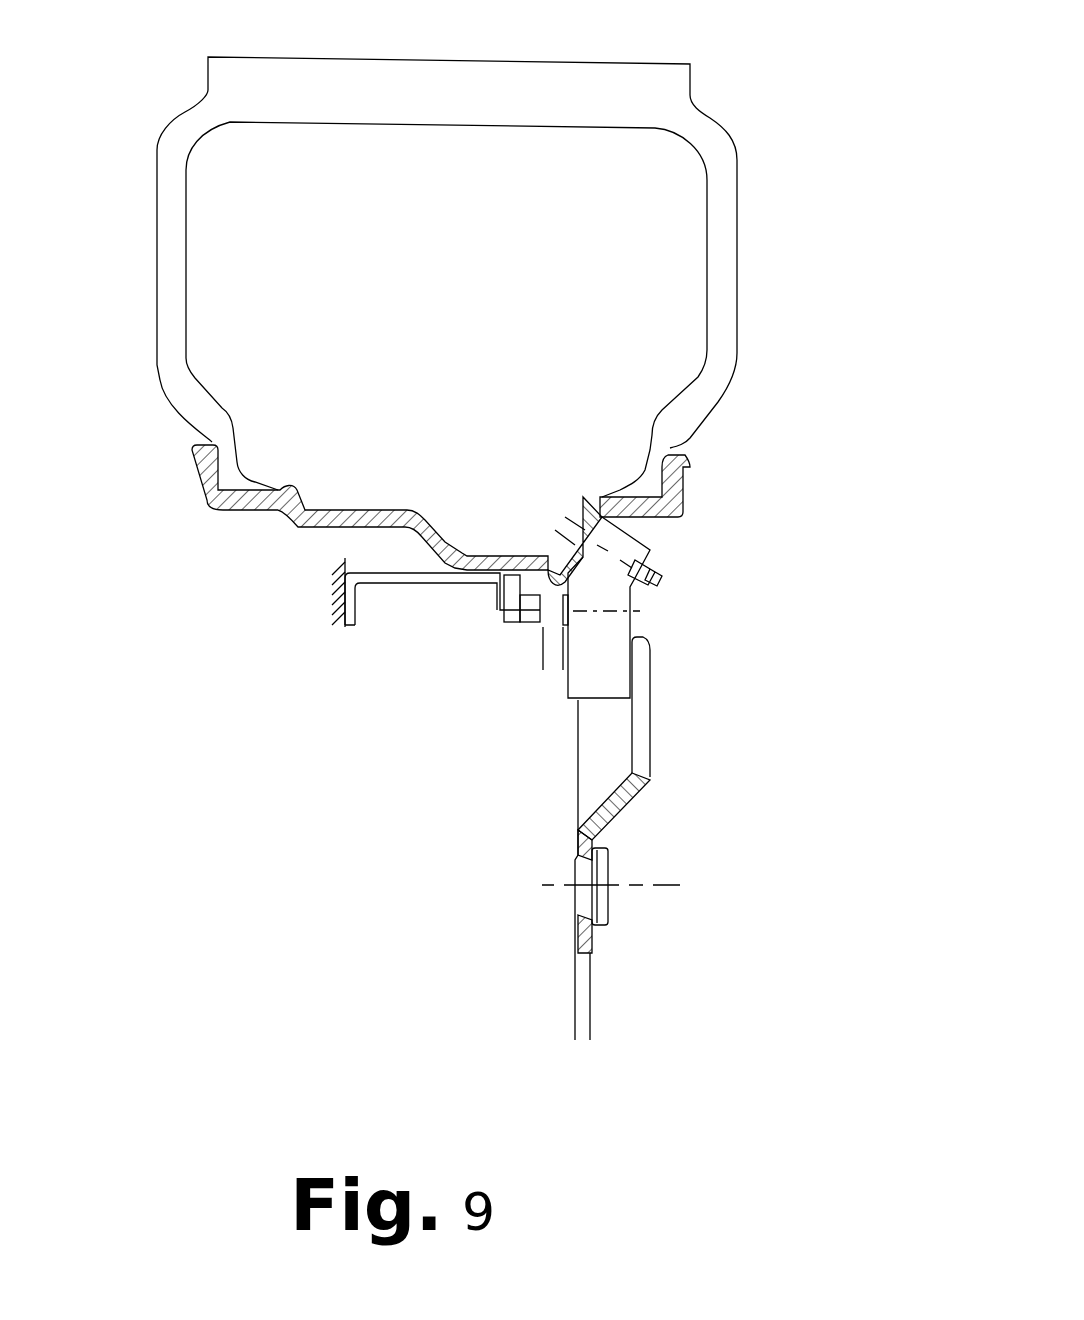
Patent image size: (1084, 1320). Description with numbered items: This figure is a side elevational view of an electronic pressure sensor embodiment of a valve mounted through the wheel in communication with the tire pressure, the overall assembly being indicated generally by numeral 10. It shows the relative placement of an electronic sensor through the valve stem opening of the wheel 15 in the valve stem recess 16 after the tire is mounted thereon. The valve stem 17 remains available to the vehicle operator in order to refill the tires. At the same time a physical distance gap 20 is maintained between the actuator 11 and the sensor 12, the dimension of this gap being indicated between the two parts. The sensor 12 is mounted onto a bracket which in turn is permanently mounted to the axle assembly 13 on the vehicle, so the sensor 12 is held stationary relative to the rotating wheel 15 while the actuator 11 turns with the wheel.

The wheel-tire assembly 10 is at (275, 678).
The actuator 11 is at (573, 697).
The sensor 12 is at (513, 623).
The axle assembly 13 is at (318, 592).
The wheel 15 is at (682, 493).
The valve stem recess 16 is at (580, 513).
The valve stem 17 is at (663, 583).
The physical distance gap 20 is at (500, 657).